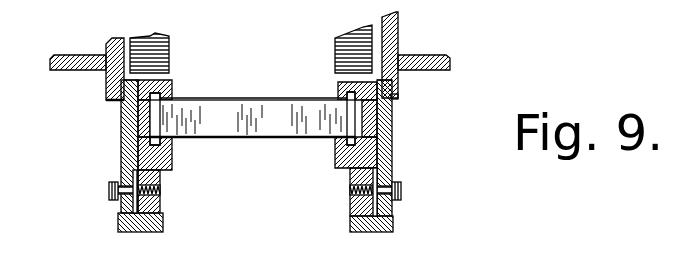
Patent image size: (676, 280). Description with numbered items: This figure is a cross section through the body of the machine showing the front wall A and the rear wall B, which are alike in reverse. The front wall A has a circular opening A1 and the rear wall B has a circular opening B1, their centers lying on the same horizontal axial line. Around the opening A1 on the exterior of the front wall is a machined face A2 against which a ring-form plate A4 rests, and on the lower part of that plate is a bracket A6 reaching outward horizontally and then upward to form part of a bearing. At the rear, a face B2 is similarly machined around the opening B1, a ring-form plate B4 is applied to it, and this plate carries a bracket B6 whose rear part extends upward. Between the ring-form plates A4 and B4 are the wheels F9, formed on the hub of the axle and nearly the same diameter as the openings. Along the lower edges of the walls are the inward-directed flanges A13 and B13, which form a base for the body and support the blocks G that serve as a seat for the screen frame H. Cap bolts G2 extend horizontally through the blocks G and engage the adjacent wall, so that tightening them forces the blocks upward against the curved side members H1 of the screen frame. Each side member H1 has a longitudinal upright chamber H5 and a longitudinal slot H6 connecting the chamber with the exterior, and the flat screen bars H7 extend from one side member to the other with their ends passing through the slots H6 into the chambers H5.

The front wall A is at (394, 141).
The circular opening A1 is at (370, 78).
The machined face A2 is at (399, 93).
The ring-form plate A4 is at (398, 33).
The bracket A6 is at (450, 62).
The inward-directed flange A13 is at (372, 233).
The rear wall B is at (120, 161).
The circular opening B1 is at (133, 79).
The machined face B2 is at (107, 101).
The ring-form plate B4 is at (107, 42).
The bracket B6 is at (62, 56).
The flange B13 is at (138, 233).
The wheels F9 is at (151, 36).
The blocks G is at (162, 211).
The cap bolts G2 is at (110, 196).
The screen frame H is at (257, 158).
The curved side members H1 is at (174, 167).
The longitudinal upright chamber H5 is at (162, 84).
The longitudinal slot H6 is at (163, 97).
The screen bars H7 is at (252, 117).